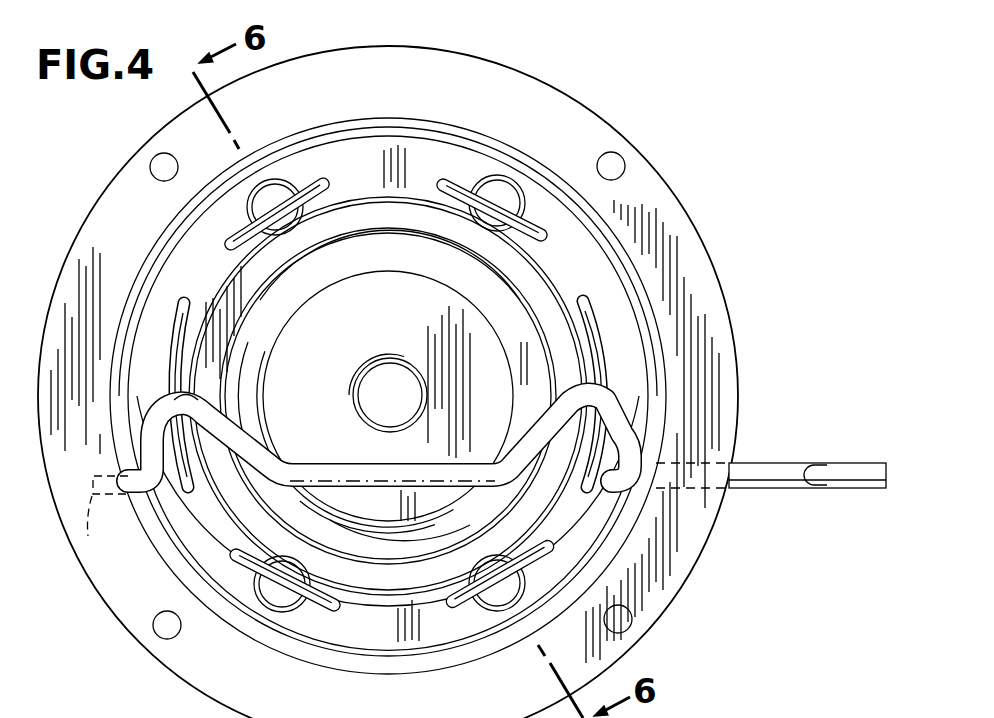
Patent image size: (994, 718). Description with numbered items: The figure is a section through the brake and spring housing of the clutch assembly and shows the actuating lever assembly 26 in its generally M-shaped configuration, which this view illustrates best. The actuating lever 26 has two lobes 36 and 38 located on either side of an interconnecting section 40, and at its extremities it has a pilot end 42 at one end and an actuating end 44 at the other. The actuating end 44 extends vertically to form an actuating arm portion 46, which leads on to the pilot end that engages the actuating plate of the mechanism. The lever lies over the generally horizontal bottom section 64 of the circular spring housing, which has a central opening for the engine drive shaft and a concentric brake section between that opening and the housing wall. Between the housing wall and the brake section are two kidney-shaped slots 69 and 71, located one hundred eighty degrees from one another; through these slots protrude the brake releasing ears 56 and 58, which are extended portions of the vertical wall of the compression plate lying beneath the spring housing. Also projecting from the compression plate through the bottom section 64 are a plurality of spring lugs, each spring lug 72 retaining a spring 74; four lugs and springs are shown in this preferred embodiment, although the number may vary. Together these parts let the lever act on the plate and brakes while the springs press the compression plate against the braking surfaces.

The actuating lever assembly 26 is at (771, 465).
The lobe 36 is at (168, 393).
The lobe 38 is at (622, 390).
The interconnecting section 40 is at (323, 465).
The pilot end 42 is at (104, 518).
The actuating end 44 is at (755, 481).
The actuating arm portion 46 is at (822, 478).
The brake releasing ear 56 is at (593, 306).
The brake releasing ear 58 is at (180, 348).
The bottom section 64 is at (368, 242).
The kidney-shaped slot 69 is at (605, 338).
The kidney-shaped slot 71 is at (182, 318).
The spring lug 72 is at (308, 184).
The spring 74 is at (247, 207).